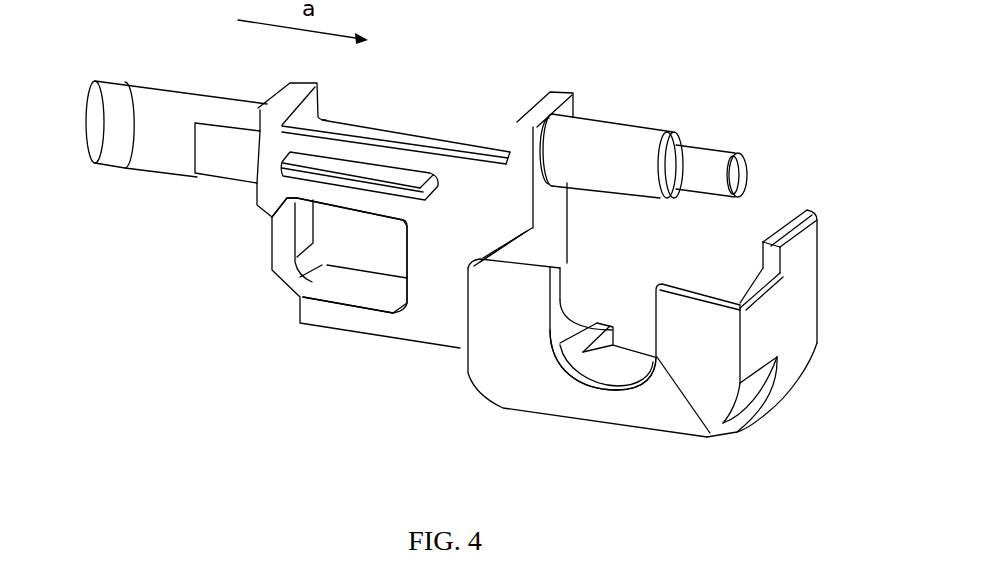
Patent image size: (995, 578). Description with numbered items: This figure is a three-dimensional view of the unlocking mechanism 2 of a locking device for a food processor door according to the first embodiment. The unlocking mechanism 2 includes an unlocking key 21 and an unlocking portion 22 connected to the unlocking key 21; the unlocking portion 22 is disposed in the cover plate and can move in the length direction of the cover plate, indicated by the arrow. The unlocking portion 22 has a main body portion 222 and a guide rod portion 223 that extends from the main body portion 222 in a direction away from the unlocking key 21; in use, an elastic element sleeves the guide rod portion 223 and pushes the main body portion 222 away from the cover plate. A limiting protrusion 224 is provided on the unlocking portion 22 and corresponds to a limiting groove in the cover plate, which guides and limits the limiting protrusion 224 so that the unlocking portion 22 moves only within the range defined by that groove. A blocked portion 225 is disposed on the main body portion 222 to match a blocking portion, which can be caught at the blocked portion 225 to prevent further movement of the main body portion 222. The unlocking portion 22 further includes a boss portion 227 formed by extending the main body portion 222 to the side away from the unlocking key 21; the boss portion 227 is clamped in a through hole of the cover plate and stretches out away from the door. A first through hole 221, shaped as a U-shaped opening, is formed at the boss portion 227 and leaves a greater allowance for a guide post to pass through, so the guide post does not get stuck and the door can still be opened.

The unlocking mechanism 2 is at (470, 485).
The unlocking key 21 is at (113, 120).
The unlocking portion 22 is at (452, 357).
The first through hole 221 is at (653, 357).
The main body portion 222 is at (468, 212).
The guide rod portion 223 is at (682, 163).
The limiting protrusion 224 is at (378, 175).
The blocked portion 225 is at (327, 267).
The boss portion 227 is at (740, 360).